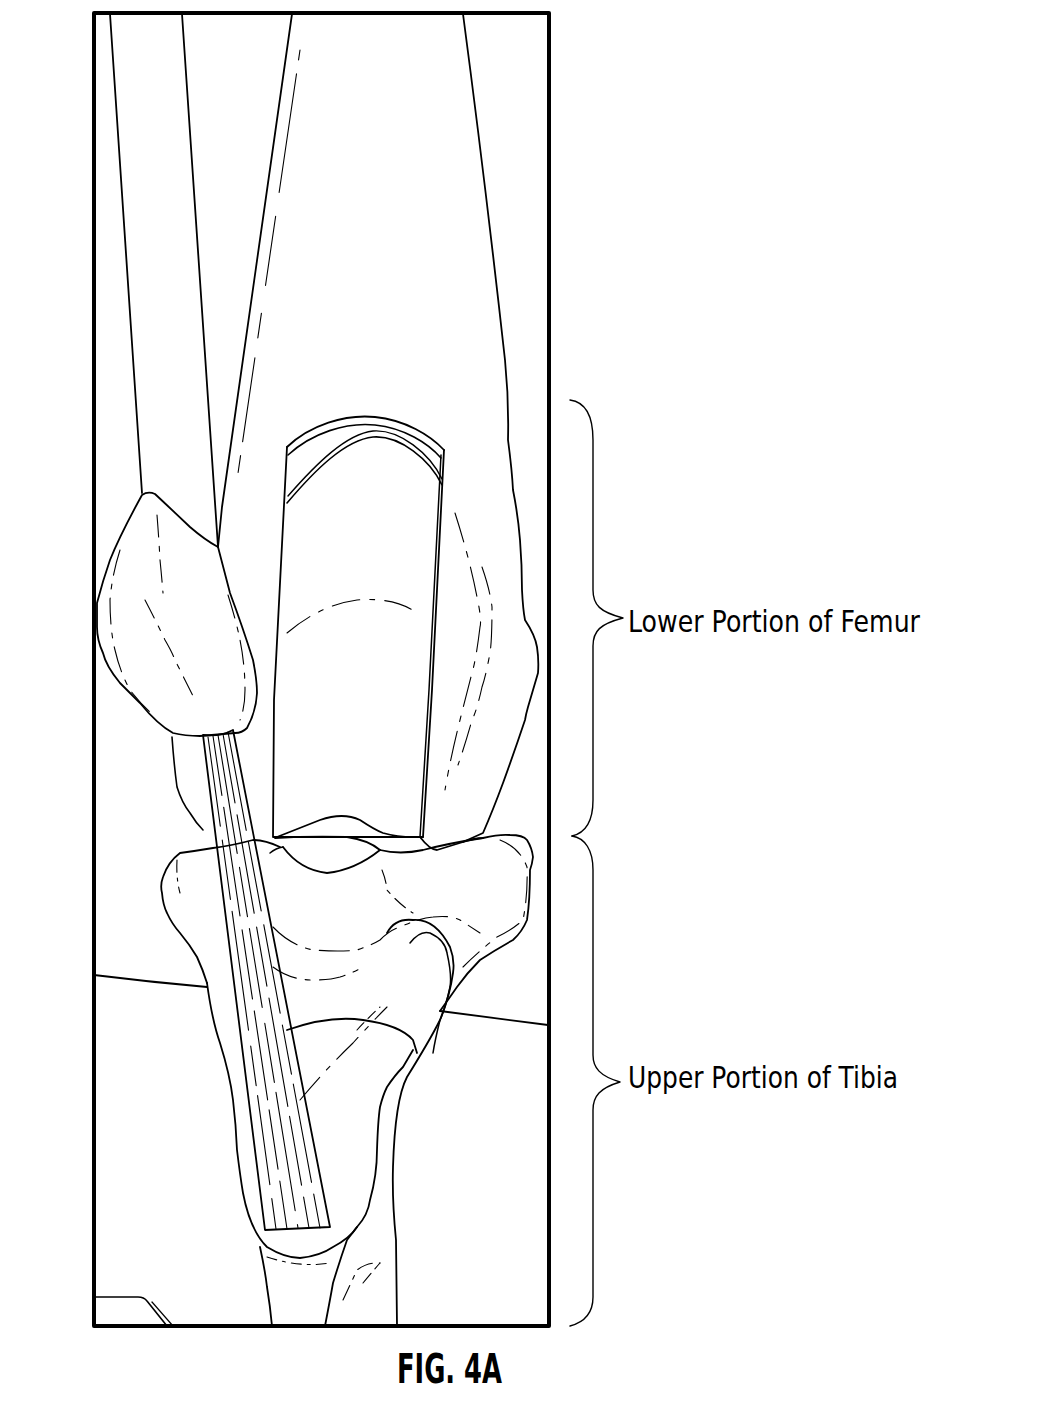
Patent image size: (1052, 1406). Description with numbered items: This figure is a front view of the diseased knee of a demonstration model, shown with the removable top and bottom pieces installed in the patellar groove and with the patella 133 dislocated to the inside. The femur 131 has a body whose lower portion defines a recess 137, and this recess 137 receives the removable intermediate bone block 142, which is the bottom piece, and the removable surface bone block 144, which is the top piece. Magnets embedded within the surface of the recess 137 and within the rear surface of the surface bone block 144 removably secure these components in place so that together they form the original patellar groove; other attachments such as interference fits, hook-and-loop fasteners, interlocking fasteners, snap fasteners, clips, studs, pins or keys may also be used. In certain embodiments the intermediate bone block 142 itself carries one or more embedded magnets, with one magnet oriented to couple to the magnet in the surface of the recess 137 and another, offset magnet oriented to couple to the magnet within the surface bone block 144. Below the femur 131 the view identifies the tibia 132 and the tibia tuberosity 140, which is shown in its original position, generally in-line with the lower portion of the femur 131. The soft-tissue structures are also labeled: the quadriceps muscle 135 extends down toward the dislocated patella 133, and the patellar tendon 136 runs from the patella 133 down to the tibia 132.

The femur 131 is at (463, 248).
The tibia 132 is at (178, 892).
The patella 133 is at (97, 610).
The quadriceps muscle 135 is at (121, 197).
The patellar tendon 136 is at (247, 970).
The recess 137 is at (476, 576).
The tibia tuberosity 140 is at (350, 1128).
The intermediate bone block 142 is at (433, 453).
The surface bone block 144 is at (410, 583).